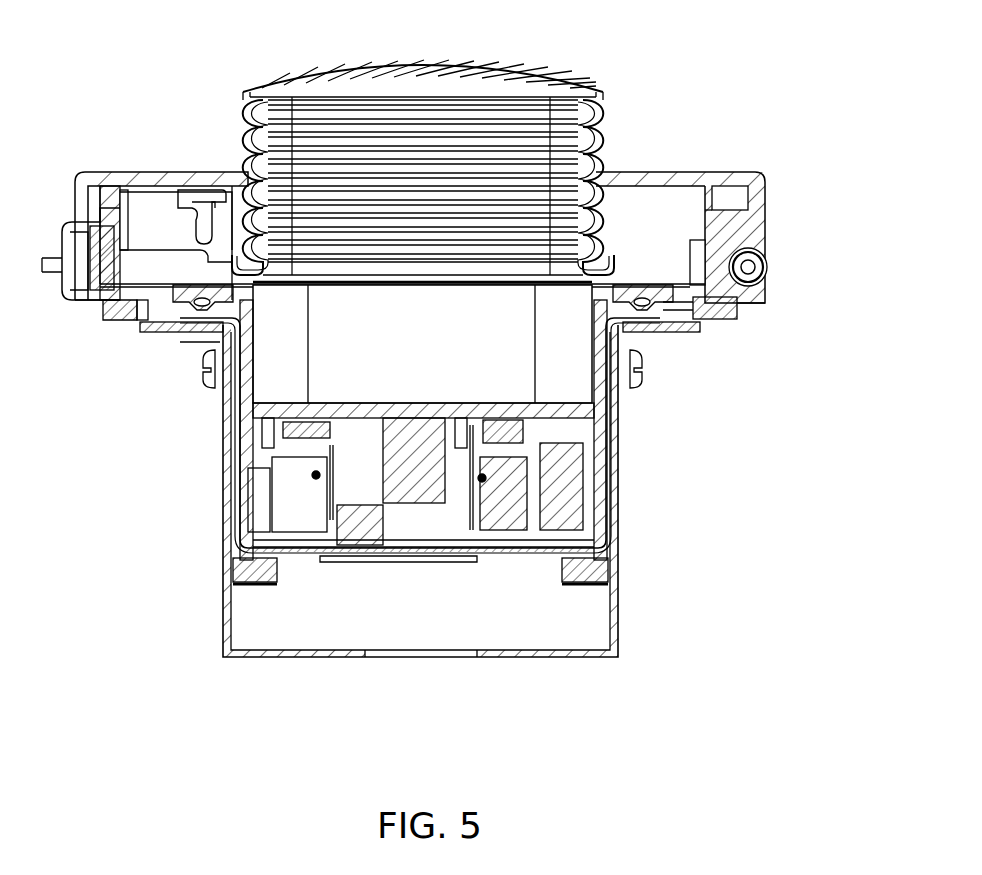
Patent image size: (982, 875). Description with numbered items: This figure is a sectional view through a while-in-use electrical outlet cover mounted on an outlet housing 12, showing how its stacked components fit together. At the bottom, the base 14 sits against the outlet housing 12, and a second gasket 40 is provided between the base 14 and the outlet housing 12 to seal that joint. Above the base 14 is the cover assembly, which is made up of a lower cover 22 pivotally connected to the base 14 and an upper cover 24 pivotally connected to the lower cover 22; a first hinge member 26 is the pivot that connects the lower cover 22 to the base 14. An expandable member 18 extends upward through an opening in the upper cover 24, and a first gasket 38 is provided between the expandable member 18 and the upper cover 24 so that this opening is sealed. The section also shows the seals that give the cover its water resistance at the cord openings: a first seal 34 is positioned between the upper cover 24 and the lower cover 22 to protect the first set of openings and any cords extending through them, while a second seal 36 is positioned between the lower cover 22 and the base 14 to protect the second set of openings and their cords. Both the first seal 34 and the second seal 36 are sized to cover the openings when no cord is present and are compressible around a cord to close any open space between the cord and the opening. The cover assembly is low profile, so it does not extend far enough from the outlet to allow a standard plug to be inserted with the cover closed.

The outlet housing 12 is at (236, 658).
The base 14 is at (752, 305).
The expandable member 18 is at (590, 72).
The lower cover 22 is at (768, 228).
The upper cover 24 is at (760, 172).
The first hinge member 26 is at (766, 272).
The first seal 34 is at (112, 197).
The second seal 36 is at (102, 275).
The first gasket 38 is at (202, 197).
The second gasket 40 is at (640, 320).